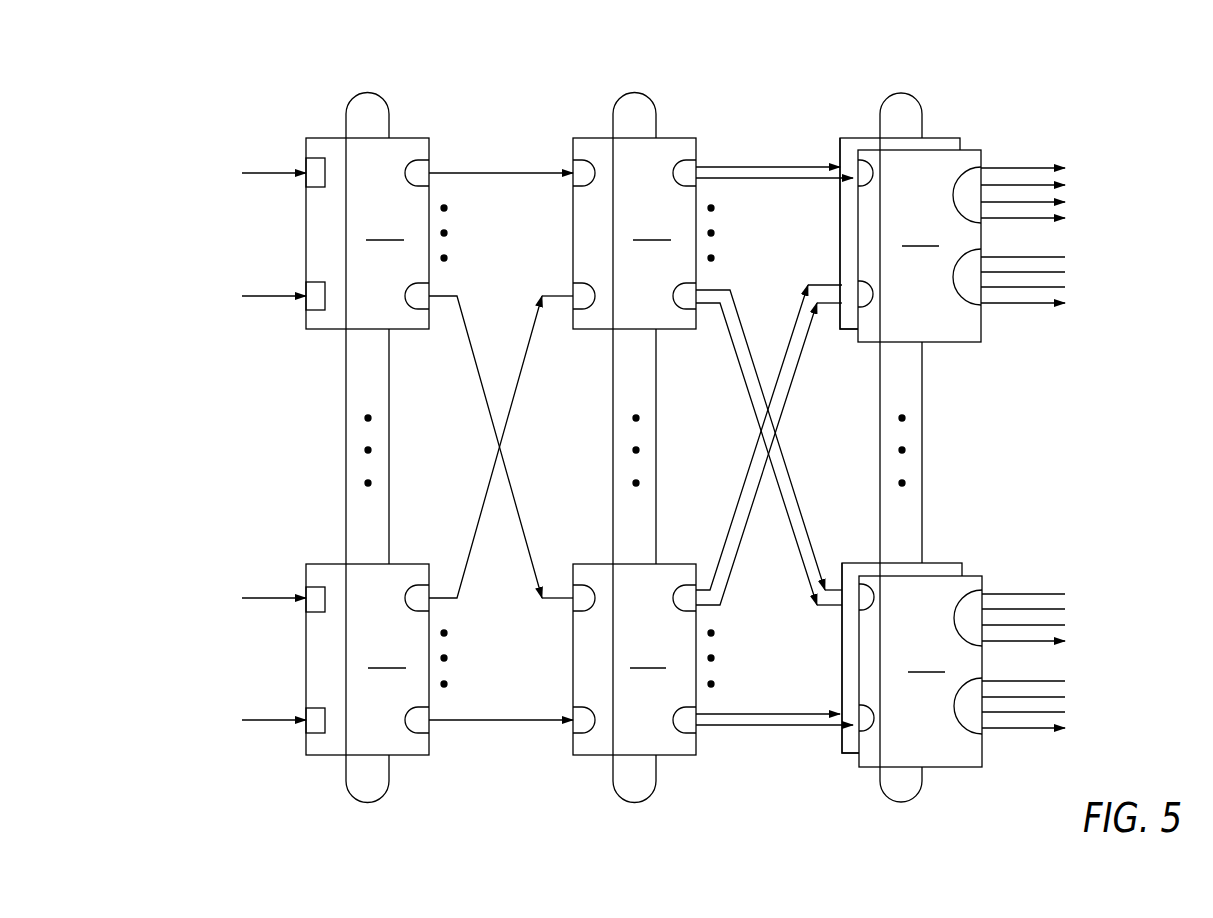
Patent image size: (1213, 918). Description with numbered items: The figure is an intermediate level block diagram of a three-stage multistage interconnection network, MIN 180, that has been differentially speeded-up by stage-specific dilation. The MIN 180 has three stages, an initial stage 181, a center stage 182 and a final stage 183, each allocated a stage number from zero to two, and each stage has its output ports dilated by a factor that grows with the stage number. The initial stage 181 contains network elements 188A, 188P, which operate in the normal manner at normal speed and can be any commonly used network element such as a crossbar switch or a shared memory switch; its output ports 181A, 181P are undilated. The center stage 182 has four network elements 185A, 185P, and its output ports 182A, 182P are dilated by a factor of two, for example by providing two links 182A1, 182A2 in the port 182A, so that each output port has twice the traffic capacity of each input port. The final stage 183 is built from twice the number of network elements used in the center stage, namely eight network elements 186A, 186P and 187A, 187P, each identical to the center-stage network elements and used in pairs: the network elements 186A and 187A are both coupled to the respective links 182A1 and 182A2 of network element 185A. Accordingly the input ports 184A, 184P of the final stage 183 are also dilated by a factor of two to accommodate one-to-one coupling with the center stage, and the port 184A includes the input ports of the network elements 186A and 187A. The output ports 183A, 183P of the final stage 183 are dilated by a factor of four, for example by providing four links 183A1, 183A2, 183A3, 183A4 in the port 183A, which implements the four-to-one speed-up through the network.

The MIN 180 is at (253, 447).
The initial stage 181 is at (366, 89).
The center stage 182 is at (633, 89).
The final stage 183 is at (900, 89).
The output port of initial stage 181A is at (424, 168).
The output port of initial stage 181P is at (427, 725).
The output port of center stage 182A is at (688, 165).
The link 182A1 is at (757, 164).
The link 182A2 is at (772, 181).
The output port of center stage 182P is at (695, 730).
The input port of final stage 184A is at (851, 163).
The input port of final stage 184P is at (852, 713).
The network element 187A is at (940, 138).
The network element 187P is at (947, 568).
The output port of final stage 183A is at (972, 167).
The link 183A1 is at (1033, 163).
The link 183A2 is at (1038, 182).
The link 183A3 is at (1038, 203).
The link 183A4 is at (1035, 220).
The output port of final stage 183P is at (972, 722).
The network element 188A is at (344, 233).
The network element 188P is at (344, 659).
The network element 185A is at (643, 233).
The network element 185P is at (643, 659).
The network element 186A is at (961, 246).
The network element 186P is at (962, 671).